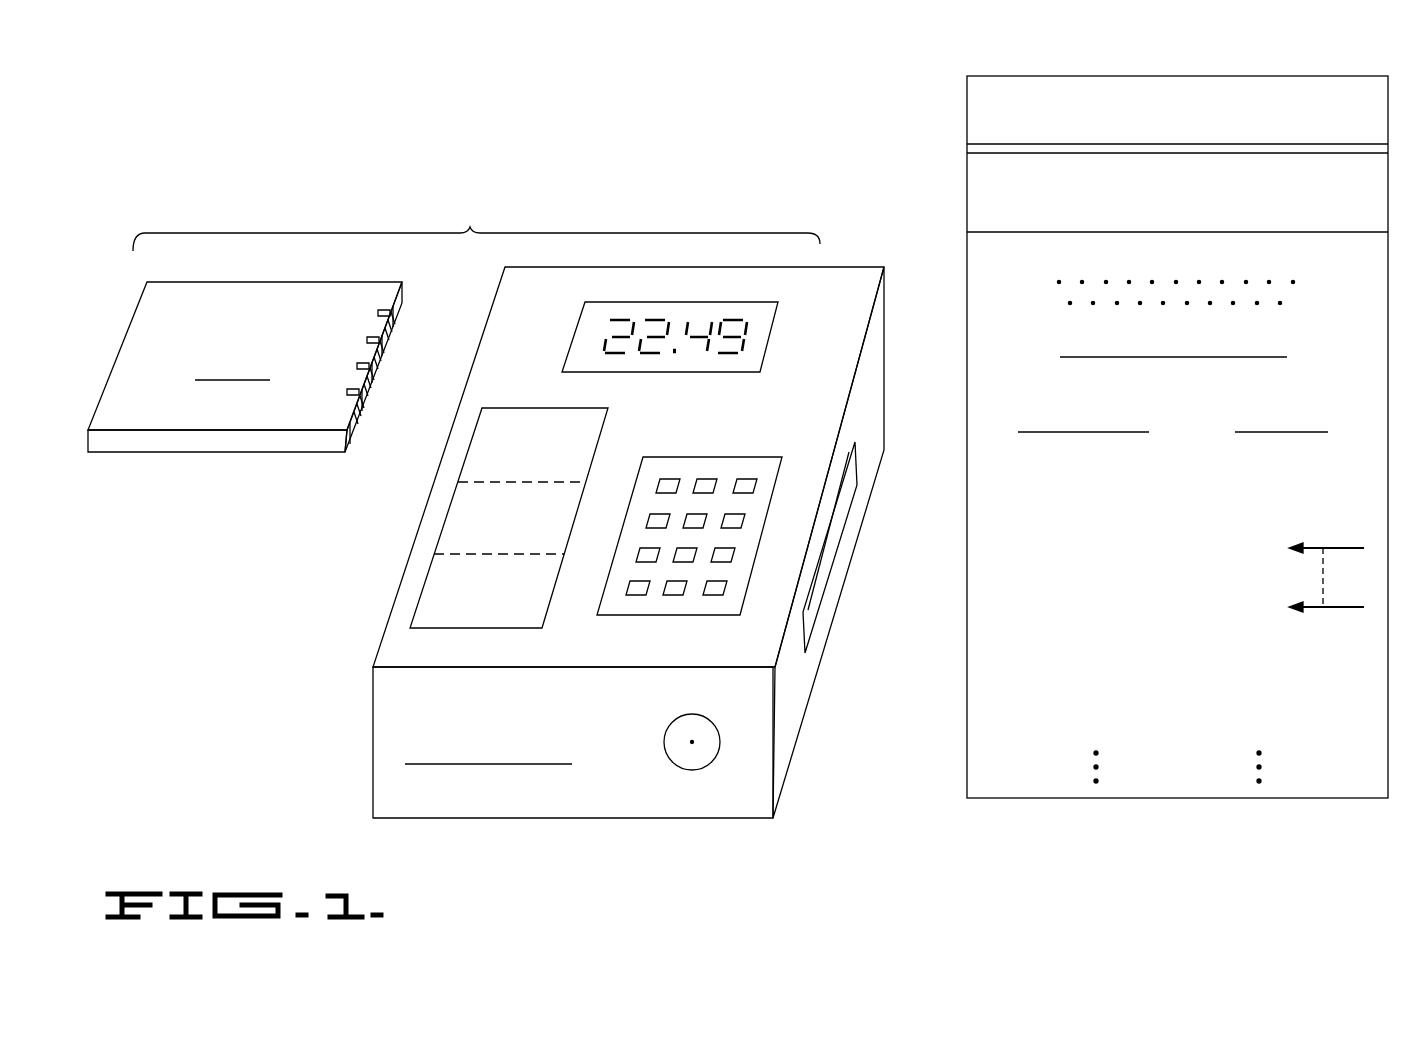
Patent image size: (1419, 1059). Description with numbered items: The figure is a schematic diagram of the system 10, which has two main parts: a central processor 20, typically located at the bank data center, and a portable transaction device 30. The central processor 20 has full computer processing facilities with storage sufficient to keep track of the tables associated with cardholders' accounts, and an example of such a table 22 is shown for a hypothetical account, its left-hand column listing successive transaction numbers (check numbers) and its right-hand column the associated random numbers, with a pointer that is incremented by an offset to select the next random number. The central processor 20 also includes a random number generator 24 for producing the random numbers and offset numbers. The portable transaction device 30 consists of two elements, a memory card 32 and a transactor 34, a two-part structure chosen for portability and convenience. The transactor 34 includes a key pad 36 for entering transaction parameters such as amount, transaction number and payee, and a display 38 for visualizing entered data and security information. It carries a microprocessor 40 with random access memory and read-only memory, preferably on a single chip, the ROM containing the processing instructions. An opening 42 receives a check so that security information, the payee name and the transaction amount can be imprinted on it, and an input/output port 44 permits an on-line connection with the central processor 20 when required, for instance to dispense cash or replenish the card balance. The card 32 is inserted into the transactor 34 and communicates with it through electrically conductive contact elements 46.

The system 10 is at (806, 140).
The central processor 20 is at (1305, 75).
The table 22 is at (975, 277).
The random number generator 24 is at (967, 193).
The portable transaction device 30 is at (476, 215).
The memory card 32 is at (208, 420).
The transactor 34 is at (492, 812).
The key pad 36 is at (693, 615).
The display 38 is at (768, 337).
The microprocessor 40 is at (527, 410).
The check receiving opening 42 is at (815, 610).
The input/output port 44 is at (702, 768).
The contact elements 46 is at (395, 330).